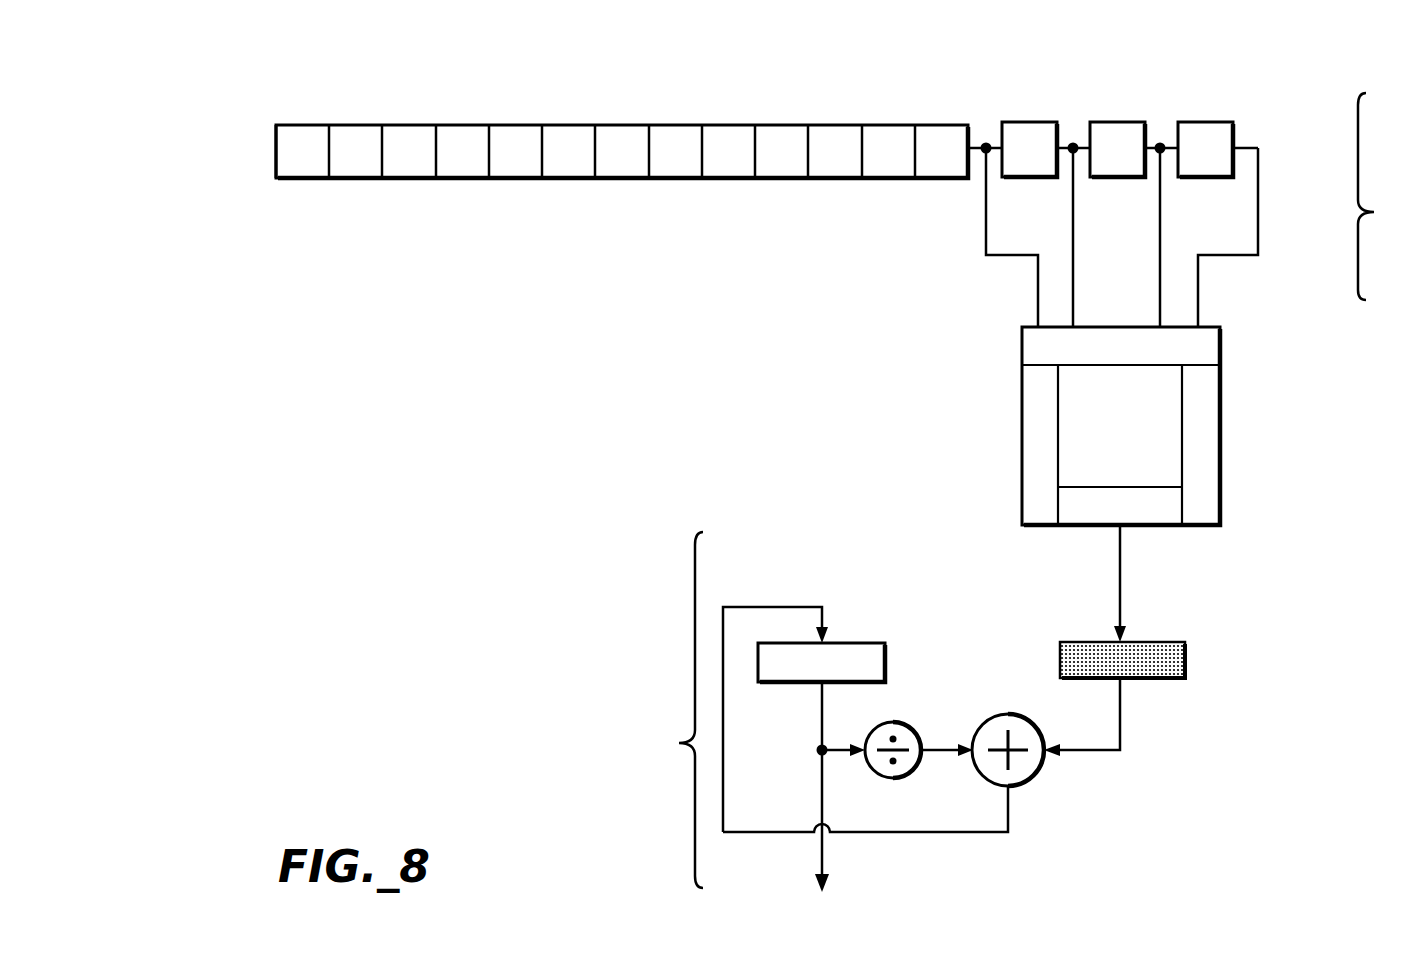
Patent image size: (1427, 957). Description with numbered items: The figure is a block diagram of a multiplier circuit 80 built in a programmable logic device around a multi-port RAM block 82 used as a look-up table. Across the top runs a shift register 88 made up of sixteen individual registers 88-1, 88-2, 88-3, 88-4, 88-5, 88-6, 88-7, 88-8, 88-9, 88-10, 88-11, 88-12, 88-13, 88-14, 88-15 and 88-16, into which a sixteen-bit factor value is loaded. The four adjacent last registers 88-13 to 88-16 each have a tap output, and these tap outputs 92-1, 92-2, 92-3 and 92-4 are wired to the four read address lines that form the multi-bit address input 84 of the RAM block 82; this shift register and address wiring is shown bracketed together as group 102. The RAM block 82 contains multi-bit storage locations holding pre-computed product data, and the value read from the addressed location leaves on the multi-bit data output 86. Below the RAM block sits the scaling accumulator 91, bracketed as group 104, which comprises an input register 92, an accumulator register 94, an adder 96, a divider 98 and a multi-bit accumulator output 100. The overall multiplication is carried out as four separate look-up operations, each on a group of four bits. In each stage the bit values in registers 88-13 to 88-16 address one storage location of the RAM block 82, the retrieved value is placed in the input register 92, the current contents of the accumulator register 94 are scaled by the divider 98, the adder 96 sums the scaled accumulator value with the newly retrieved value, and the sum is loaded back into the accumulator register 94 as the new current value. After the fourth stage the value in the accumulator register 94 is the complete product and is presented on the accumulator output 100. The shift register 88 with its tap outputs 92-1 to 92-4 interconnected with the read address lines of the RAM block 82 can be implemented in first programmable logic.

The multiplier circuit 80 is at (238, 64).
The shift register 88 is at (240, 155).
The individual register 88-1 is at (305, 178).
The individual register 88-2 is at (362, 125).
The individual register 88-3 is at (402, 178).
The individual register 88-4 is at (462, 125).
The individual register 88-5 is at (505, 178).
The individual register 88-6 is at (562, 125).
The individual register 88-7 is at (612, 178).
The individual register 88-8 is at (665, 125).
The individual register 88-9 is at (718, 178).
The individual register 88-10 is at (770, 125).
The individual register 88-11 is at (825, 178).
The individual register 88-12 is at (875, 125).
The individual register 88-13 is at (935, 178).
The individual register 88-14 is at (1022, 122).
The individual register 88-15 is at (1120, 122).
The individual register 88-16 is at (1215, 122).
The tap output 92-1 is at (986, 210).
The tap output 92-2 is at (1073, 210).
The tap output 92-3 is at (1160, 210).
The tap output 92-4 is at (1258, 210).
The address generation section 102 is at (1391, 196).
The multi-bit address input 84 is at (1124, 235).
The multi-port RAM block 82 is at (1022, 405).
The multi-bit data output 86 is at (1120, 562).
The input register 92 is at (1185, 660).
The accumulator register 94 is at (885, 662).
The adder 96 is at (1032, 722).
The divider 98 is at (893, 722).
The multi-bit accumulator output 100 is at (822, 866).
The accumulation section 104 is at (675, 710).
The scaling accumulator 91 is at (992, 749).